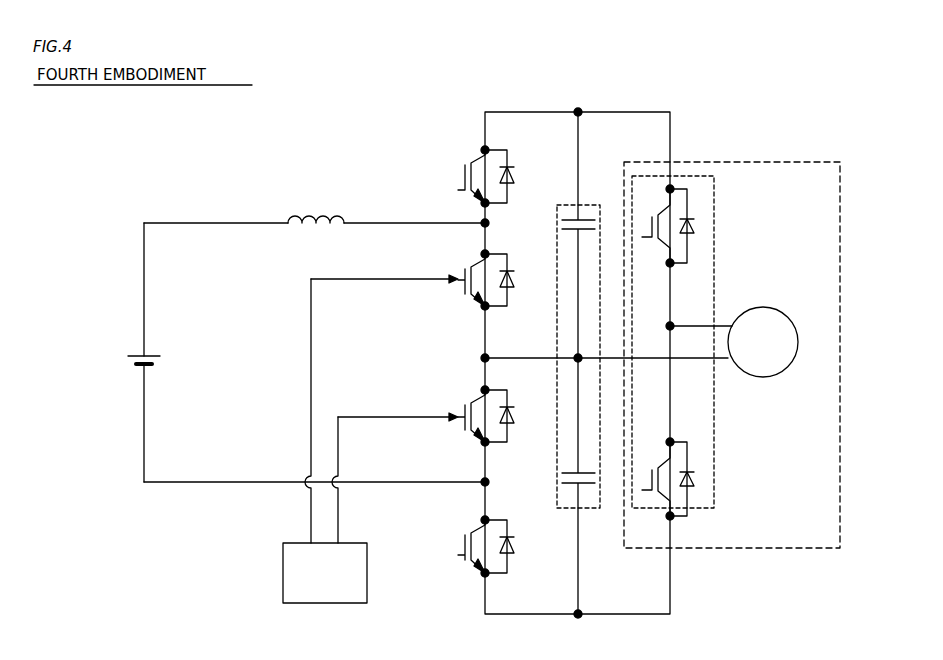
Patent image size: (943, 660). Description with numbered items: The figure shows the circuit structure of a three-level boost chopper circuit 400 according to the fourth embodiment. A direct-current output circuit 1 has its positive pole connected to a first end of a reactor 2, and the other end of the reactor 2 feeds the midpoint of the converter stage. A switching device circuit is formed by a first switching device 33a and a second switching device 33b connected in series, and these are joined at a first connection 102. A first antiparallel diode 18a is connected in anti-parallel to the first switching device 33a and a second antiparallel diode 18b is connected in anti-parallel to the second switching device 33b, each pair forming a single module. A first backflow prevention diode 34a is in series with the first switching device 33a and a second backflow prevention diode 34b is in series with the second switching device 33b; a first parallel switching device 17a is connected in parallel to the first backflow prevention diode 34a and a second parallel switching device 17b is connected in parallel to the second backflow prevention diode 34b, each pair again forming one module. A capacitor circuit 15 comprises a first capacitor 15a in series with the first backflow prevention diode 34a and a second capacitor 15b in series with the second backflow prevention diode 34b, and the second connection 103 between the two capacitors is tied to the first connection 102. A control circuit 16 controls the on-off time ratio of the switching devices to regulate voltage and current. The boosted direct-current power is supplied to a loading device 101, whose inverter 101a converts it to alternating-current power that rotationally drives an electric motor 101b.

The boost chopper circuit 400 is at (232, 150).
The direct-current output circuit 1 is at (134, 352).
The reactor 2 is at (295, 216).
The control circuit 16 is at (283, 569).
The first parallel switching device 17a is at (458, 190).
The second parallel switching device 17b is at (458, 555).
The first antiparallel diode 18a is at (540, 252).
The second antiparallel diode 18b is at (512, 430).
The first switching device 33a is at (458, 280).
The second switching device 33b is at (458, 417).
The first backflow prevention diode 34a is at (512, 172).
The second backflow prevention diode 34b is at (512, 558).
The capacitor circuit 15 is at (588, 208).
The first capacitor 15a is at (575, 218).
The second capacitor 15b is at (576, 485).
The first connection 102 is at (482, 358).
The second connection 103 is at (575, 352).
The loading device 101 is at (720, 160).
The inverter 101a is at (714, 238).
The electric motor 101b is at (765, 300).